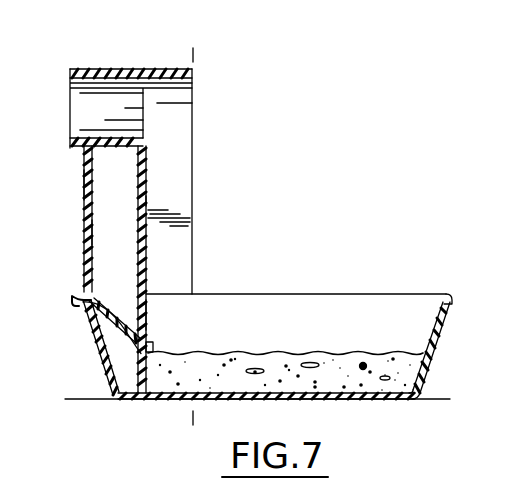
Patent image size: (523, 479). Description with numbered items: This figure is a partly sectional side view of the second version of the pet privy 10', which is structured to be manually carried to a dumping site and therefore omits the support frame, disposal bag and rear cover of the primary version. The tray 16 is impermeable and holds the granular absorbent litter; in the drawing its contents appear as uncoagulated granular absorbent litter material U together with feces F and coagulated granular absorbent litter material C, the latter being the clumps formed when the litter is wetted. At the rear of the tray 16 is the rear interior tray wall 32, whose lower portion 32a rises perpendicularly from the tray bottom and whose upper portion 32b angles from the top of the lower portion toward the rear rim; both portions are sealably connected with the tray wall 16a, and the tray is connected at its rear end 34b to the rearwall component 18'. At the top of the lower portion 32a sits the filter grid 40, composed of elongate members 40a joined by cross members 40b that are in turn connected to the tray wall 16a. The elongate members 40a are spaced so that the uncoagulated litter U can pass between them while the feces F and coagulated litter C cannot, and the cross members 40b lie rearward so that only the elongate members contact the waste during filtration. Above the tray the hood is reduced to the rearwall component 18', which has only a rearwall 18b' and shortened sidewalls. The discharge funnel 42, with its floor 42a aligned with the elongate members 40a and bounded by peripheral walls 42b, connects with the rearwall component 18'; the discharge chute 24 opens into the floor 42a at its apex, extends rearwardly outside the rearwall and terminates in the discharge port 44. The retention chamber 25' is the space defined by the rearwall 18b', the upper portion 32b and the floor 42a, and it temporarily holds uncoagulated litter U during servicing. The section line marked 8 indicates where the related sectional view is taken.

The pet privy 10' is at (257, 288).
The tray 16 is at (428, 358).
The tray wall 16a is at (437, 330).
The rearwall component 18' is at (223, 170).
The rearwall 18b' is at (56, 232).
The discharge chute 24 is at (87, 68).
The retention chamber 25' is at (186, 223).
The rear interior tray wall 32 is at (120, 372).
The lower portion 32a is at (119, 397).
The upper portion 32b is at (122, 366).
The tray bottom edge 34b is at (416, 378).
The filter grid 40 is at (158, 331).
The elongate members 40a is at (152, 322).
The cross members 40b is at (135, 345).
The discharge funnel 42 is at (266, 140).
The floor 42a is at (138, 186).
The peripheral walls 42b is at (193, 200).
The discharge port 44 is at (70, 86).
The section line 8- 8 is at (193, 55).
The feces F is at (290, 328).
The uncoagulated granular absorbent litter material U is at (293, 355).
The coagulated granular absorbent litter material C is at (364, 364).